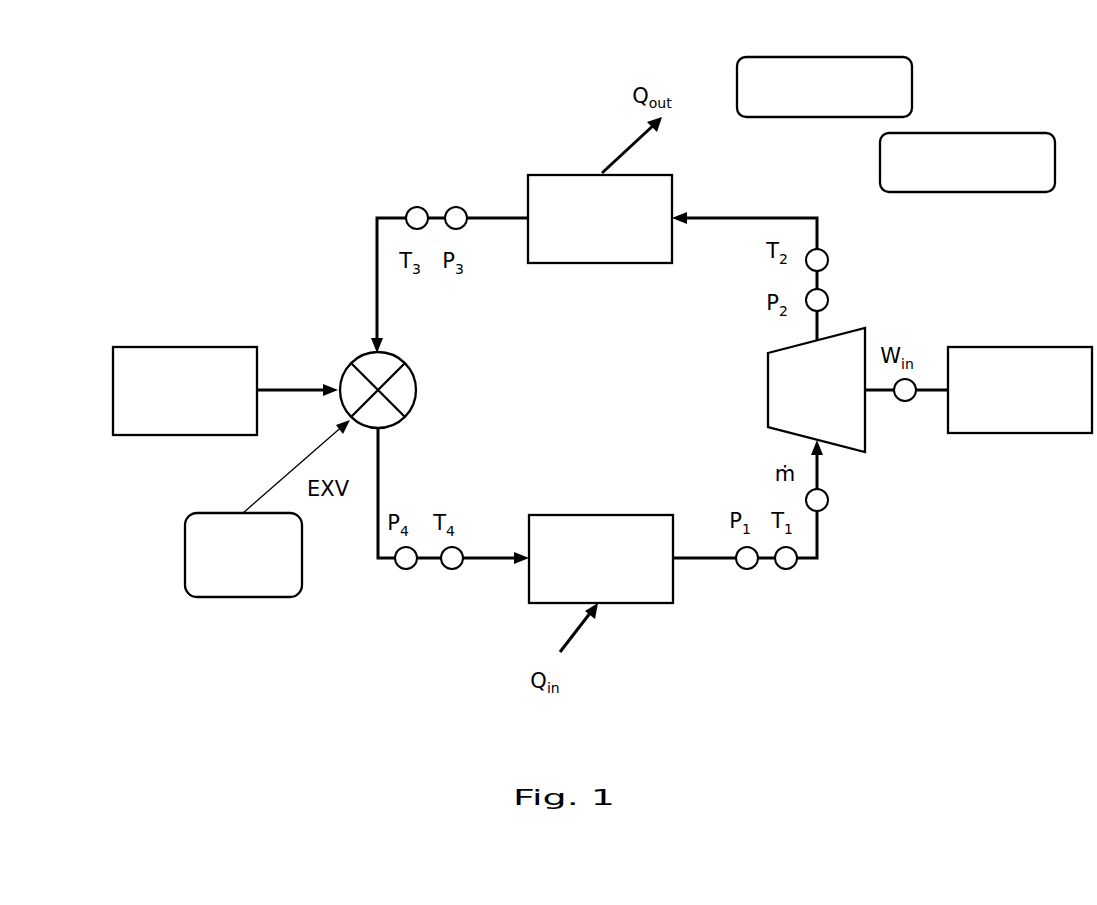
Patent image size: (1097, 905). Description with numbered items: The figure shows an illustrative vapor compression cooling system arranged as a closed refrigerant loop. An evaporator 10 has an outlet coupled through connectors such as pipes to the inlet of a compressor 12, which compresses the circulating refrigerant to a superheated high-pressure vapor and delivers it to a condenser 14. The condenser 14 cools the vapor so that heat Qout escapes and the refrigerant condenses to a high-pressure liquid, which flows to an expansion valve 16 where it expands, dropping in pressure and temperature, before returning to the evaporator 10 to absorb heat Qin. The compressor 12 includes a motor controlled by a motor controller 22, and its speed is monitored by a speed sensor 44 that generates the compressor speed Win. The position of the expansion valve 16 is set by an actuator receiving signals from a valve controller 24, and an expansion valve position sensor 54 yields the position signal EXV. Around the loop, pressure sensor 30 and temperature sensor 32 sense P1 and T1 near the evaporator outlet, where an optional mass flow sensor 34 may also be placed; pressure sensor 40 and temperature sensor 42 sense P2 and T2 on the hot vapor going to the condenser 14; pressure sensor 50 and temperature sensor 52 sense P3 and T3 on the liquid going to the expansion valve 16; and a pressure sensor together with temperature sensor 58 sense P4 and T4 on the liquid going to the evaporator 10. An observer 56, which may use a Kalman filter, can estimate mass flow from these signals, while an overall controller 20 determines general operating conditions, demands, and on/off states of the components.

The evaporator 10 is at (547, 603).
The compressor 12 is at (767, 375).
The condenser 14 is at (578, 188).
The expansion valve 16 is at (395, 362).
The overall controller 20 is at (823, 63).
The motor controller 22 is at (977, 357).
The valve controller 24 is at (225, 352).
The pressure sensor 30 is at (747, 565).
The temperature sensor 32 is at (788, 565).
The mass flow sensor 34 is at (822, 505).
The pressure sensor 40 is at (826, 297).
The temperature sensor 42 is at (826, 253).
The speed sensor 44 is at (908, 400).
The pressure sensor 50 is at (447, 212).
The temperature sensor 52 is at (417, 215).
The expansion valve position sensor 54 is at (223, 527).
The observer 56 is at (967, 138).
The temperature sensor 58 is at (452, 565).